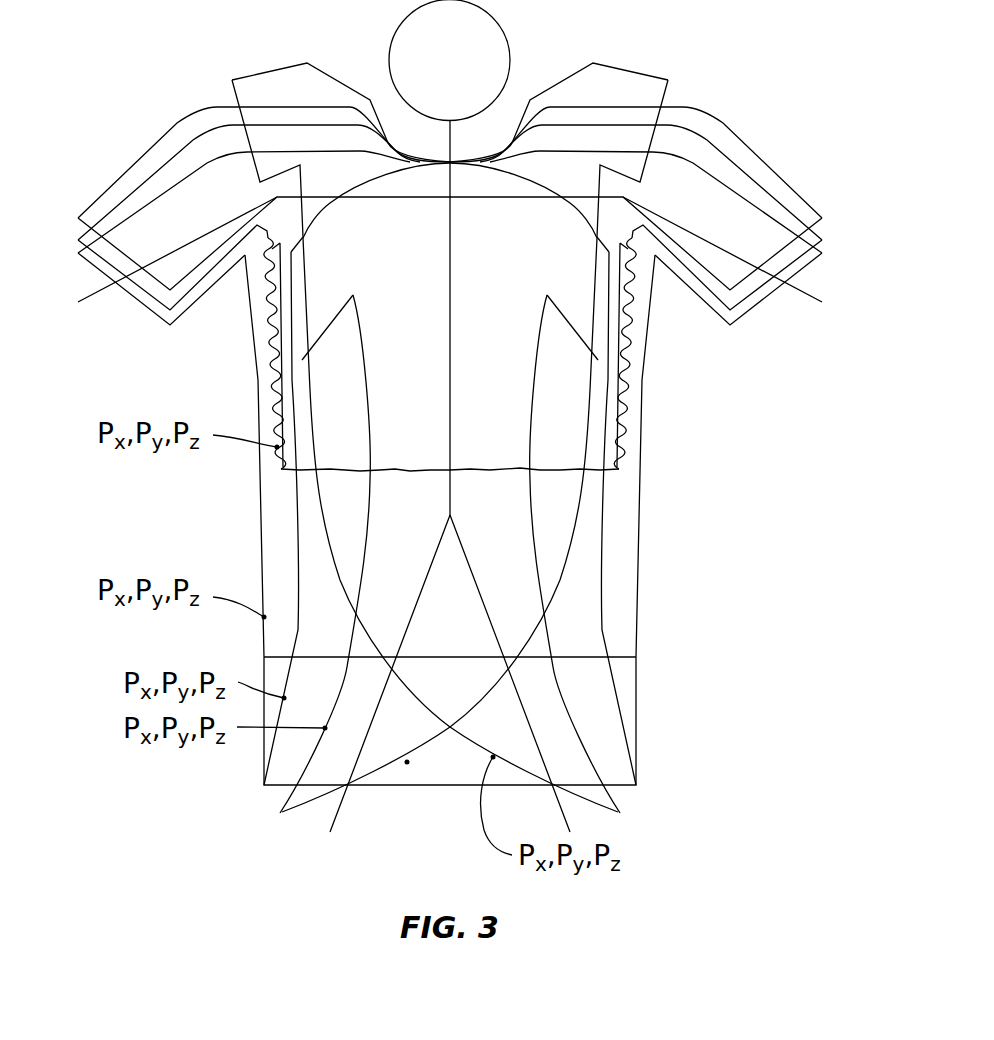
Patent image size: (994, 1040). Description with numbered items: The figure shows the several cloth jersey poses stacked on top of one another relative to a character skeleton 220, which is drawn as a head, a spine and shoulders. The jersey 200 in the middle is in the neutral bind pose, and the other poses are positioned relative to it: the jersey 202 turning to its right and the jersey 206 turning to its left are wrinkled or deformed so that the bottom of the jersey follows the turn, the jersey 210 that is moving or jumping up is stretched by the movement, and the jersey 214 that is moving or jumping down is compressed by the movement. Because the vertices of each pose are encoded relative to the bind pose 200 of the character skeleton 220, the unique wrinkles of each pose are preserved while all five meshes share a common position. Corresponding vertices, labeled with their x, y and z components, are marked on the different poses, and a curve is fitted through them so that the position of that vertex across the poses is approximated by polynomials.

The jersey in bind pose 200 is at (635, 525).
The jersey turning right 202 is at (580, 736).
The jersey turning left 206 is at (407, 762).
The jersey moving up 210 is at (600, 592).
The jersey moving down 214 is at (570, 470).
The character skeleton 220 is at (450, 440).